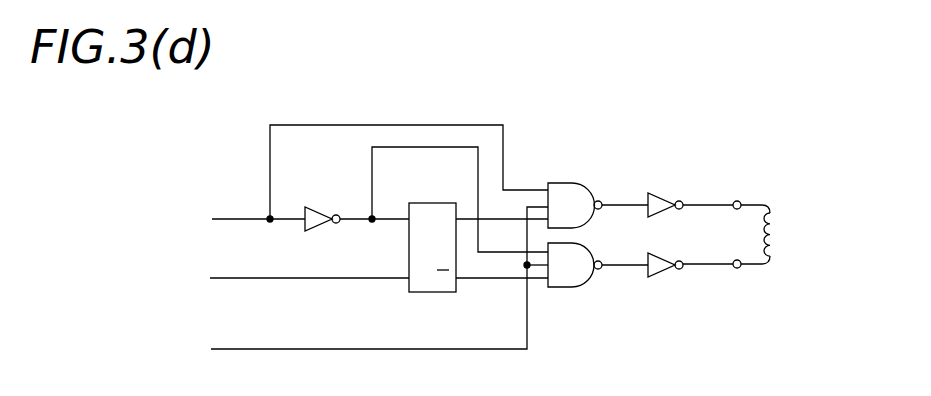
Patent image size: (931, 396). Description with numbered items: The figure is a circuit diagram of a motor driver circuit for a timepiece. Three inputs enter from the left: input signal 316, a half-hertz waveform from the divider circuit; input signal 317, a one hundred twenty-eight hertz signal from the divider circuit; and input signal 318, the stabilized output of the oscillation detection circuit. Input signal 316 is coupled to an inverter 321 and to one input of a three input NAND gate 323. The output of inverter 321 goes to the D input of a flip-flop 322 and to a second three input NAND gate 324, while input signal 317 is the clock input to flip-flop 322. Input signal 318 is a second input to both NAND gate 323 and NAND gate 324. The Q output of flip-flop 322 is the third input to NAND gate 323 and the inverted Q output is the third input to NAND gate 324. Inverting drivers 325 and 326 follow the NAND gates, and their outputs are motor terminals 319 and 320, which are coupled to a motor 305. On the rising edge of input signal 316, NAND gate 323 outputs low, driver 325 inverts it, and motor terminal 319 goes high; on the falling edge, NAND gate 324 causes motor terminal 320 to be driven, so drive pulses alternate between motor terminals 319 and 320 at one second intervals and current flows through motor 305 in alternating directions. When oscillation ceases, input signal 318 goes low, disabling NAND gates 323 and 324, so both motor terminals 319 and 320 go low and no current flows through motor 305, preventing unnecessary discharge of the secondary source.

The motor 305 is at (778, 226).
The input signal 316 is at (223, 217).
The input signal 317 is at (223, 277).
The input signal 318 is at (225, 348).
The motor terminal 319 is at (705, 204).
The motor terminal 320 is at (716, 265).
The inverter 321 is at (330, 196).
The flip-flop 322 is at (440, 294).
The three input NAND gate 323 is at (589, 175).
The three input NAND gate 324 is at (570, 286).
The inverting driver 325 is at (664, 199).
The inverting driver 326 is at (667, 268).